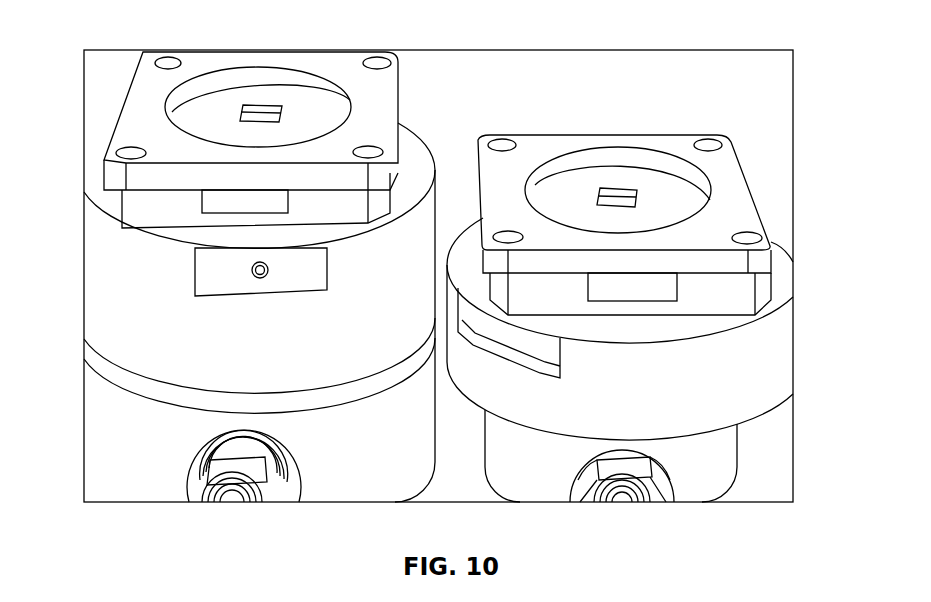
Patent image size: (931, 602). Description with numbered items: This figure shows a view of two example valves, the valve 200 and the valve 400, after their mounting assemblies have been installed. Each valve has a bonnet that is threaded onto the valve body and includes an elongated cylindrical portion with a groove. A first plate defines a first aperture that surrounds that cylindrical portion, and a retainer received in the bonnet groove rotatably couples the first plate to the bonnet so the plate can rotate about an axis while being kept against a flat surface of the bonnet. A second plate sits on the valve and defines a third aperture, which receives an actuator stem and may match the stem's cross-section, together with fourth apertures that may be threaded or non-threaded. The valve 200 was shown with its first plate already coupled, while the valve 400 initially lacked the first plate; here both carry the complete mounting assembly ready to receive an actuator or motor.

The valve 200 is at (132, 33).
The valve 400 is at (775, 156).